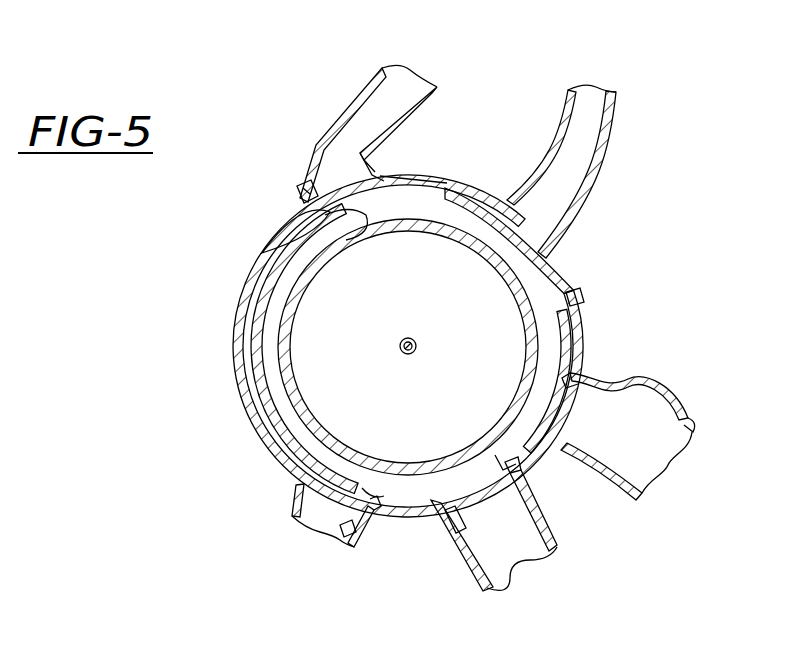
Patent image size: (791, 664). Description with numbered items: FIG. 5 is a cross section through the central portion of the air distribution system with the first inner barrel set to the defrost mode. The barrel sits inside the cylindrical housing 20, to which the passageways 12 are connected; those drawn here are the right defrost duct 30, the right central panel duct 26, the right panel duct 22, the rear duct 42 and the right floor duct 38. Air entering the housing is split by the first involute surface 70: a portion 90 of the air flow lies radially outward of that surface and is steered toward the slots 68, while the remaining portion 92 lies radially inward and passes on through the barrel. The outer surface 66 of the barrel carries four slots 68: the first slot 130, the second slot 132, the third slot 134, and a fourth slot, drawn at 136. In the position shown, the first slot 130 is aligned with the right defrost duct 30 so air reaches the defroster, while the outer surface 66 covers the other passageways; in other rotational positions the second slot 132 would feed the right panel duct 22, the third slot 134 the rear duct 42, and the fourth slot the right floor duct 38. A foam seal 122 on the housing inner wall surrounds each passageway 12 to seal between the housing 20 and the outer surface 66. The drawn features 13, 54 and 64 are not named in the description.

The passageways 12 is at (302, 92).
The clip 13 is at (304, 180).
The cylindrical housing 20 is at (421, 215).
The right panel duct 22 is at (676, 393).
The right central panel duct 26 is at (612, 120).
The right defrost duct 30 is at (308, 138).
The right floor duct 38 is at (363, 543).
The rear duct 42 is at (548, 527).
The central pin 54 is at (414, 337).
The pin aperture 64 is at (399, 345).
The outer surface 66 is at (490, 192).
The slots 68 is at (322, 232).
The first involute surface 70 is at (441, 179).
The portion of the air flow 90 is at (265, 352).
The remaining portion of the air flow 92 is at (362, 396).
The foam seal 122 is at (583, 370).
The first slot 130 is at (330, 222).
The second slot 132 is at (562, 312).
The third slot 134 is at (500, 462).
The wall segment 136 is at (369, 493).